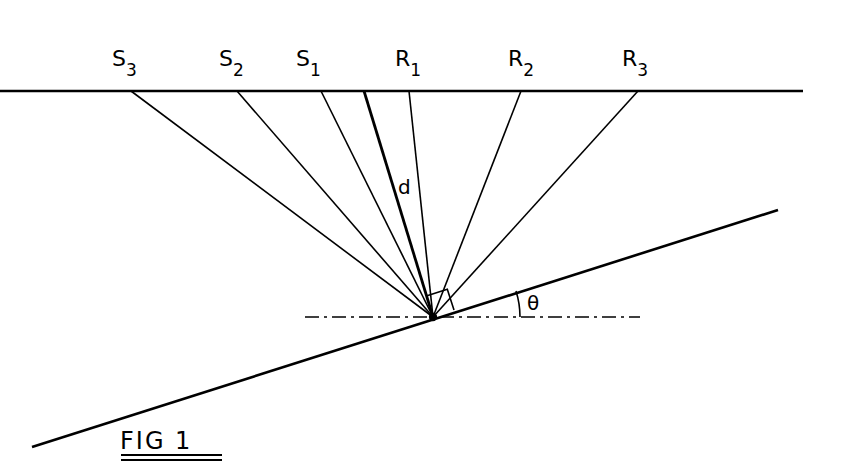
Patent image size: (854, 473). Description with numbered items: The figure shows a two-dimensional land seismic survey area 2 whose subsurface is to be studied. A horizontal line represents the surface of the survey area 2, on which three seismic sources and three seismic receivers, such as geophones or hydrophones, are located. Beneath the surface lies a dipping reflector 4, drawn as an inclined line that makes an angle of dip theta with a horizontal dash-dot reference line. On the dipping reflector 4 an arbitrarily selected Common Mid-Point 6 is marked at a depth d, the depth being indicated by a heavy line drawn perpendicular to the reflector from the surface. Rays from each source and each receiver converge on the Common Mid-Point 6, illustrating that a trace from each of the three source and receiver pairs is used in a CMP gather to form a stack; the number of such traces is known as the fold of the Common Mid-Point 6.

The seismic survey area 2 is at (776, 89).
The dipping reflector 4 is at (728, 225).
The Common Mid-Point (CMP) 6 is at (432, 322).